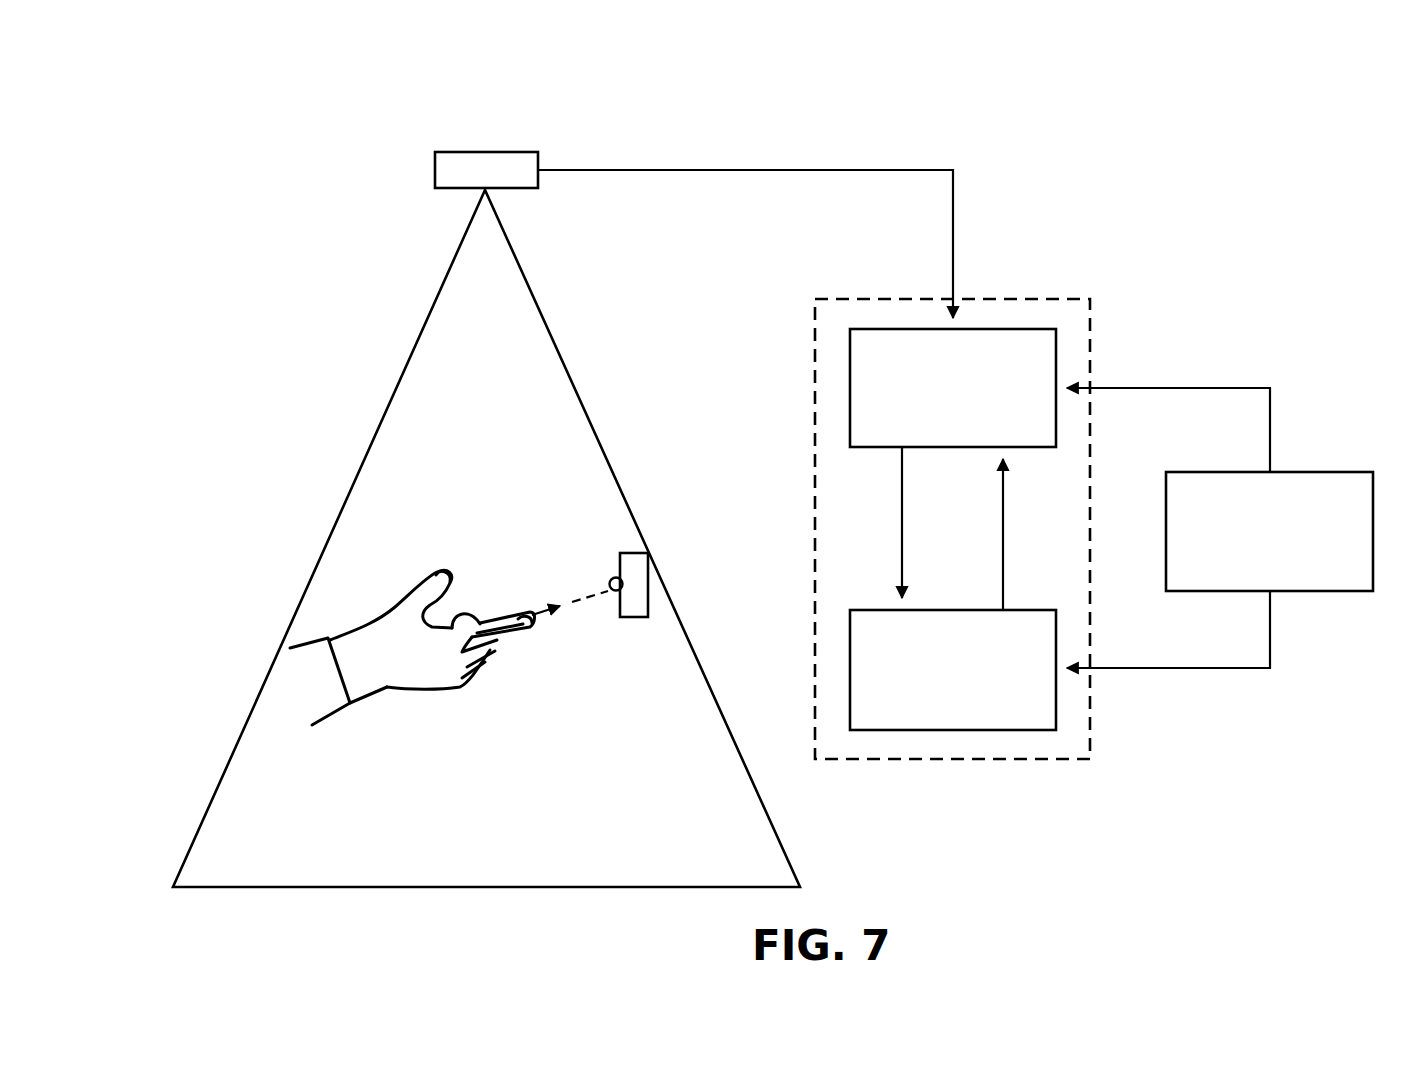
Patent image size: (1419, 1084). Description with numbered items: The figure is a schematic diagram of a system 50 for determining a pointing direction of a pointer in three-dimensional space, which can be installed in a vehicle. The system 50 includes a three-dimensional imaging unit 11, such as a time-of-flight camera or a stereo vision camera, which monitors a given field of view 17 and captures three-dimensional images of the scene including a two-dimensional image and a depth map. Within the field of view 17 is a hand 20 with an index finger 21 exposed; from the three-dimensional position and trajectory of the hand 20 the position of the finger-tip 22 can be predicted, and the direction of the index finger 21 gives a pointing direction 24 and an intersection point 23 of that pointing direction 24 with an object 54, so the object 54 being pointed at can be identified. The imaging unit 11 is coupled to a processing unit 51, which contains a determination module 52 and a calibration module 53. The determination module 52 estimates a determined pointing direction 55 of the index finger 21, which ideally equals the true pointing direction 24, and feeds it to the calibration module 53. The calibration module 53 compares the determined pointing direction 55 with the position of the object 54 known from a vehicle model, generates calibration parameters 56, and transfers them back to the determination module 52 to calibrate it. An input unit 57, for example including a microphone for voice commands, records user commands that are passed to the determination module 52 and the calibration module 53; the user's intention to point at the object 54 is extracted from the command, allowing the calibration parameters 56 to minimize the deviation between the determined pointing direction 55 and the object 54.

The system 50 is at (272, 116).
The 3D imaging unit 11 is at (463, 152).
The field of view 17 is at (387, 410).
The hand 20 is at (378, 625).
The index finger 21 is at (492, 616).
The finger-tip 22 is at (530, 619).
The intersection point 23 is at (609, 596).
The pointing direction 24 is at (546, 606).
The object 54 is at (633, 618).
The processing unit 51 is at (1023, 298).
The determination module 52 is at (936, 403).
The calibration module 53 is at (936, 686).
The determined pointing direction 55 is at (902, 488).
The calibration parameters 56 is at (1003, 490).
The input unit 57 is at (1254, 548).